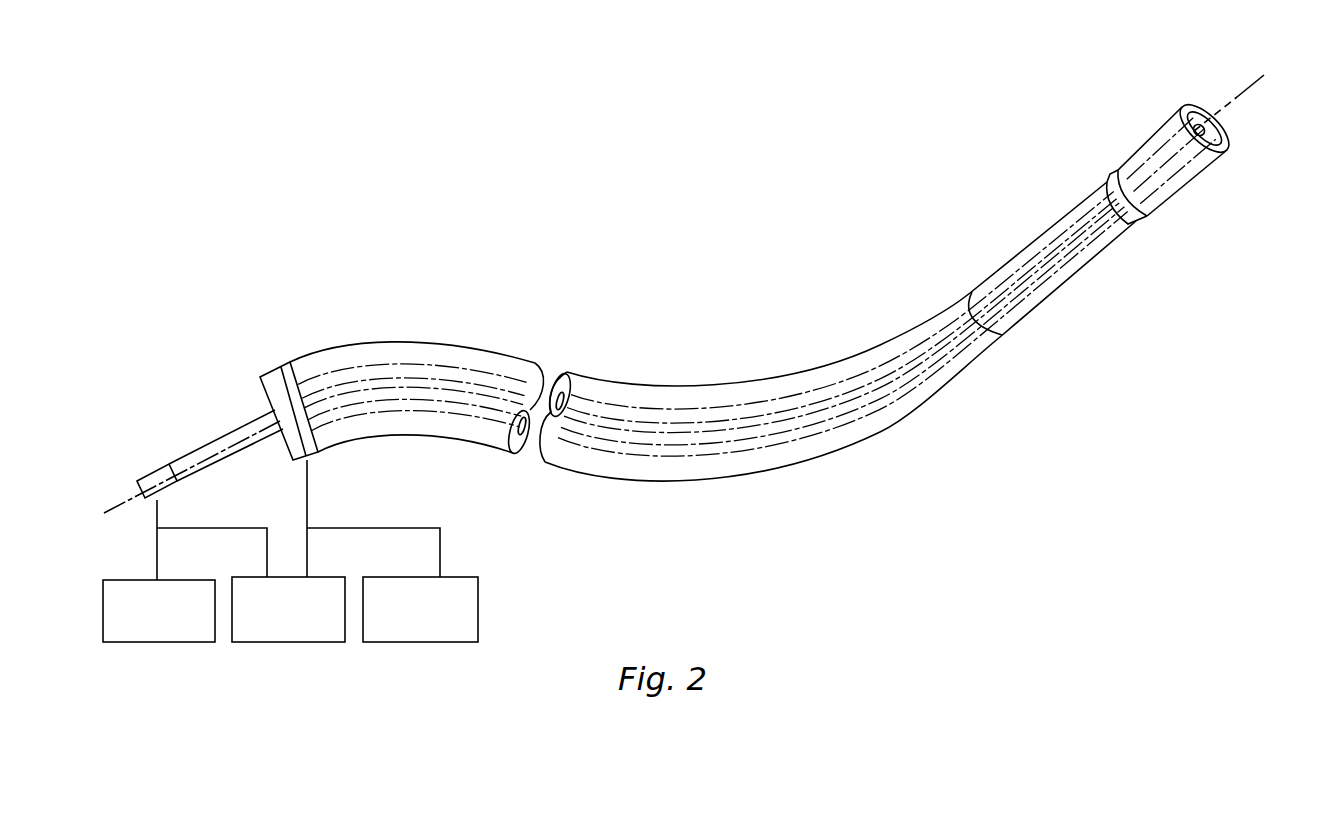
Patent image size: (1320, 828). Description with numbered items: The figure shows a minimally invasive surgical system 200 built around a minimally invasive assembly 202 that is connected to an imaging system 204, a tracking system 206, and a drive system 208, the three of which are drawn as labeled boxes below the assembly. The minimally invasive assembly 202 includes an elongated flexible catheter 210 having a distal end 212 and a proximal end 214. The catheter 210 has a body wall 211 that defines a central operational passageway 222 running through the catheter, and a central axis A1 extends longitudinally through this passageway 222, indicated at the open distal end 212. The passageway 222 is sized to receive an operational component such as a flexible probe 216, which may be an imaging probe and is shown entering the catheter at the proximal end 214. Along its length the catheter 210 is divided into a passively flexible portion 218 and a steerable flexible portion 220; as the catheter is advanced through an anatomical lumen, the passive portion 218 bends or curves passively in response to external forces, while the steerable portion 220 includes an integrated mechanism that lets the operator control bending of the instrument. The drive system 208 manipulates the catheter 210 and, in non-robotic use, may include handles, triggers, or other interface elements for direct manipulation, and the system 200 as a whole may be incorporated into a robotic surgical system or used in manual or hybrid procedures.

The minimally invasive surgical system 200 is at (498, 150).
The minimally invasive assembly 202 is at (838, 348).
The imaging system 204 is at (158, 643).
The tracking system 206 is at (291, 643).
The drive system 208 is at (421, 643).
The elongated flexible catheter 210 is at (417, 391).
The body wall 211 is at (399, 414).
The distal end 212 is at (1205, 134).
The proximal end 214 is at (289, 359).
The flexible probe 216 is at (191, 452).
The passively flexible portion 218 is at (825, 459).
The steerable flexible portion 220 is at (1052, 294).
The central operational passageway 222 is at (1226, 134).
The central axis A1 is at (1253, 85).